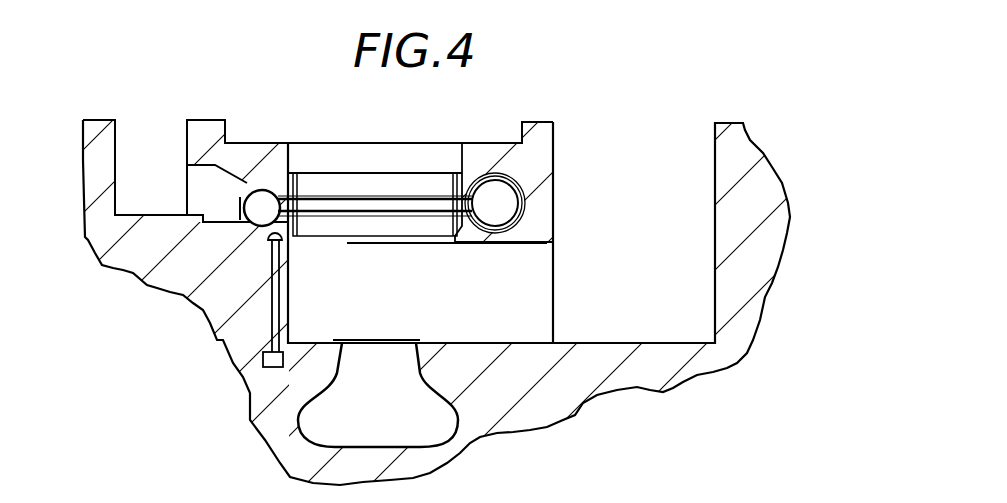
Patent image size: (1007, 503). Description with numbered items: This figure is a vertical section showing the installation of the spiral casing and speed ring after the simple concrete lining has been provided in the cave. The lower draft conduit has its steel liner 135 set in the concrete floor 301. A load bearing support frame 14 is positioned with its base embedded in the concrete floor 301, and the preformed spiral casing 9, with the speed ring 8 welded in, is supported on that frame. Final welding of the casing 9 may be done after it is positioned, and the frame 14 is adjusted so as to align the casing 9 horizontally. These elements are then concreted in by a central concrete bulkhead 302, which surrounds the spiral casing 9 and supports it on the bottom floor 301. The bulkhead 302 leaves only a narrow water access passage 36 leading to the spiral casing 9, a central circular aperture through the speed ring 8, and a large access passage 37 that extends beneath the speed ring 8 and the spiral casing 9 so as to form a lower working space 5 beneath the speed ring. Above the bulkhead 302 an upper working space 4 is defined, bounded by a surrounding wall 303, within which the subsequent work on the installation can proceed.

The upper working space 4 is at (247, 128).
The central concrete bulkhead 302 is at (480, 144).
The surrounding wall 303 is at (553, 125).
The spiral casing 9 is at (520, 196).
The speed ring 8 is at (475, 232).
The water access passage 36 is at (192, 201).
The load bearing support frame 14 is at (272, 318).
The lower working space 5 is at (470, 332).
The access passage 37 is at (543, 343).
The concrete floor 301 is at (632, 345).
The steel liner 135 is at (470, 438).